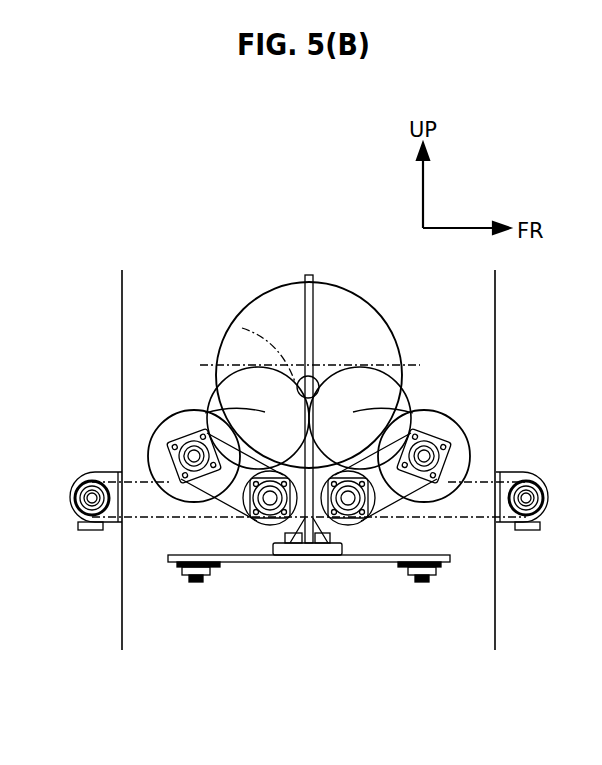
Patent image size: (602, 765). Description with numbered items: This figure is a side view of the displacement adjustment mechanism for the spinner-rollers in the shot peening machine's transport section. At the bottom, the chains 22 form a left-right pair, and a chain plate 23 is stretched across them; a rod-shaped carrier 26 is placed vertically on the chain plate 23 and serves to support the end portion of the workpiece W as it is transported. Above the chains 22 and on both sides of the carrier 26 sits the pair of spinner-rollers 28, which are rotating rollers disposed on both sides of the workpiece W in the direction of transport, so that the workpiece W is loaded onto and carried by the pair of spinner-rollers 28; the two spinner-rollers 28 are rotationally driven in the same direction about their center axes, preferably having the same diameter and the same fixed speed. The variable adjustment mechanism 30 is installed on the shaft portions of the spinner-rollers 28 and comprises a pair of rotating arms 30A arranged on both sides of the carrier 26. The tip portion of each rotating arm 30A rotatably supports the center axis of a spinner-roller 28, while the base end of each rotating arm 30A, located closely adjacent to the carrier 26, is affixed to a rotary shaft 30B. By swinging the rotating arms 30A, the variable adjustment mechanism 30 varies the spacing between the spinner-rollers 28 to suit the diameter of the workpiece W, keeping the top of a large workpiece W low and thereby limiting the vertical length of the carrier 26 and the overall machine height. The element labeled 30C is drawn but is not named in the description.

The carrier 26 is at (285, 287).
The workpiece W is at (242, 328).
The spinner-roller 28 is at (240, 368).
The variable adjustment mechanism 30 is at (150, 528).
The rotating arm 30A is at (226, 512).
The rotary shaft 30B is at (266, 525).
The drive shaft 30C is at (170, 520).
The chain 22 is at (195, 583).
The chain plate 23 is at (305, 563).